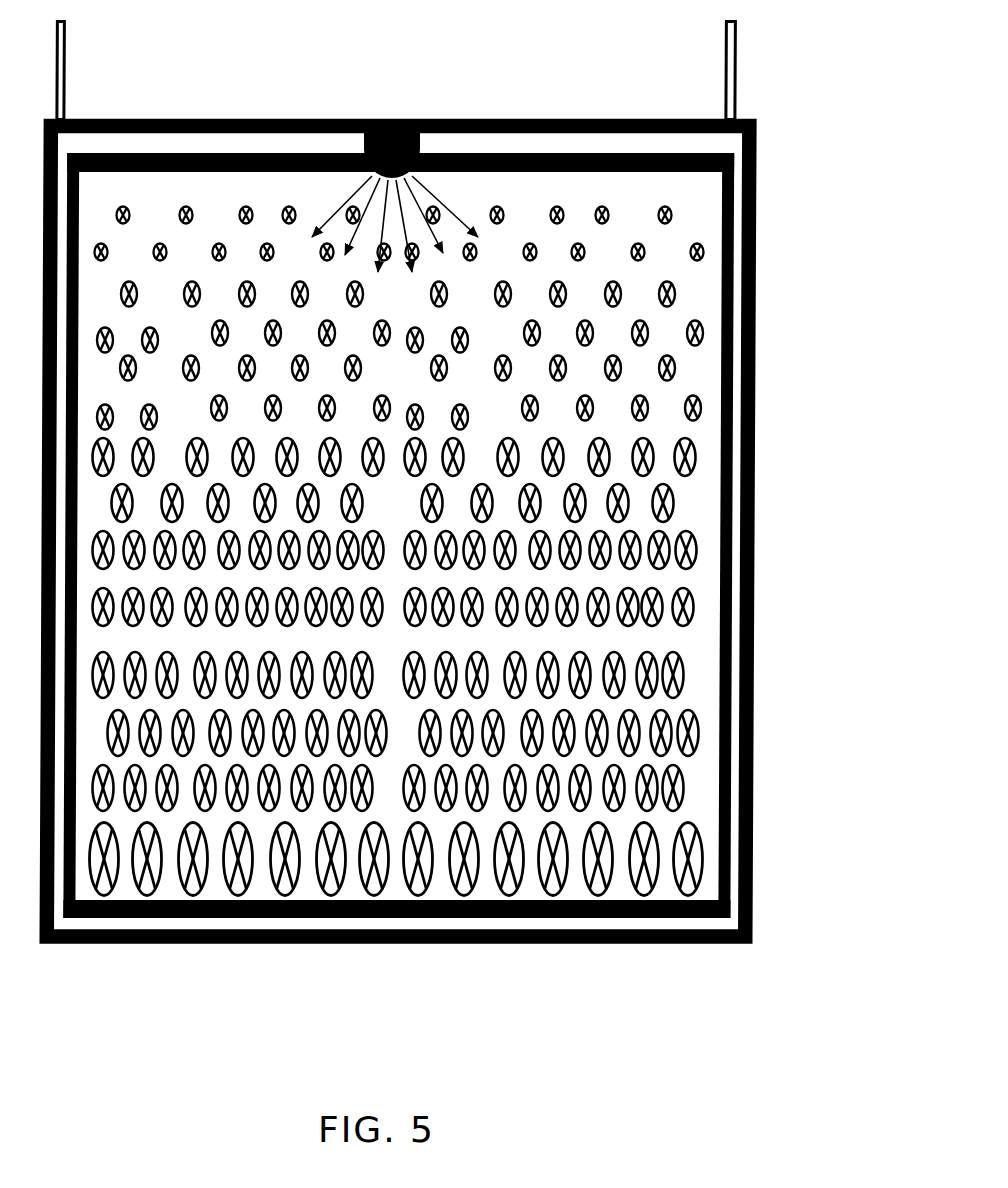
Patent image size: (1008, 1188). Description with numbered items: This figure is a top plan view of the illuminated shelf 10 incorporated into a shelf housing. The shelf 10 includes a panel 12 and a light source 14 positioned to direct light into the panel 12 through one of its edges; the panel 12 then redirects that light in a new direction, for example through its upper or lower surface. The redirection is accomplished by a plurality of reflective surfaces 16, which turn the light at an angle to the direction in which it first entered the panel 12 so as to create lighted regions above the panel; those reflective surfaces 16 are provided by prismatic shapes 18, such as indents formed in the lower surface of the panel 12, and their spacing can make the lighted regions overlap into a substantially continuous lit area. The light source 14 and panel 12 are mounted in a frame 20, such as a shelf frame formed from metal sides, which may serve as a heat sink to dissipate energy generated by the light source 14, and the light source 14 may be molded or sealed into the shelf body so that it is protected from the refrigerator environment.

The illuminated shelf 10 is at (703, 225).
The panel 12 is at (693, 375).
The light source 14 is at (447, 118).
The reflective surfaces 16 is at (688, 450).
The prismatic shapes 18 is at (702, 468).
The frame 20 is at (753, 565).